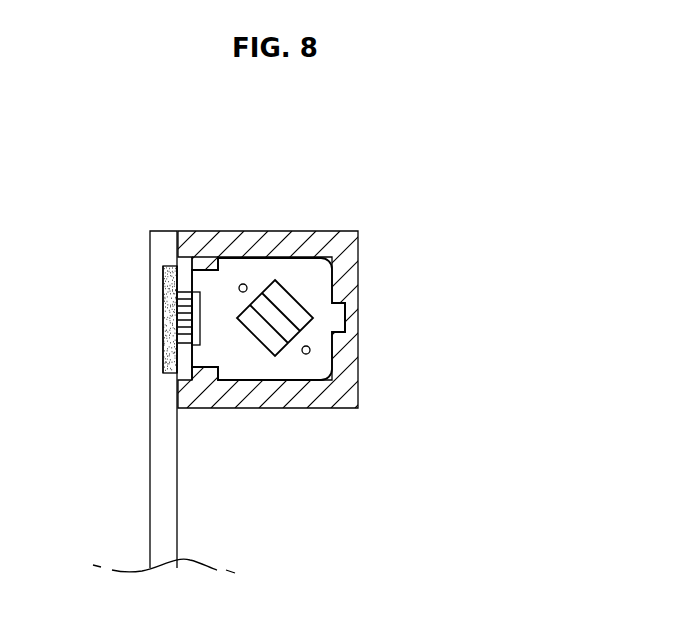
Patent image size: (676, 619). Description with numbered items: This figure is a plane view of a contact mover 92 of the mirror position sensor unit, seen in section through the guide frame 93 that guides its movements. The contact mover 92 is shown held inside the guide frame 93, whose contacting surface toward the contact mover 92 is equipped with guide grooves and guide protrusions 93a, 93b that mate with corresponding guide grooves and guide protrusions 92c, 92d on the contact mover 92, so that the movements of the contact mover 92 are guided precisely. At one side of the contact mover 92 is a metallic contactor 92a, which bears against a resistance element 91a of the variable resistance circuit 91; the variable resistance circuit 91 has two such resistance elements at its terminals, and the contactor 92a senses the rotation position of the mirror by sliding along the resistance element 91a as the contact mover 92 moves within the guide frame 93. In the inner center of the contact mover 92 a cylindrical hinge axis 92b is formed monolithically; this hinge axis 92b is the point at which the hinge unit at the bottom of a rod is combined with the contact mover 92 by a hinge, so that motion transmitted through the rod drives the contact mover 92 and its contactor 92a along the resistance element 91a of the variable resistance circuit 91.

The variable resistance circuit 91 is at (150, 348).
The resistance element 91a is at (168, 367).
The contact mover 92 is at (320, 283).
The metallic contactor 92a is at (167, 300).
The cylindrical hinge axis 92b is at (283, 334).
The guide groove or guide protrusion 92c is at (345, 310).
The guide groove or guide protrusion 92d is at (213, 365).
The guide frame 93 is at (328, 233).
The guide groove or guide protrusion 93a is at (337, 323).
The guide groove or guide protrusion 93b is at (207, 257).